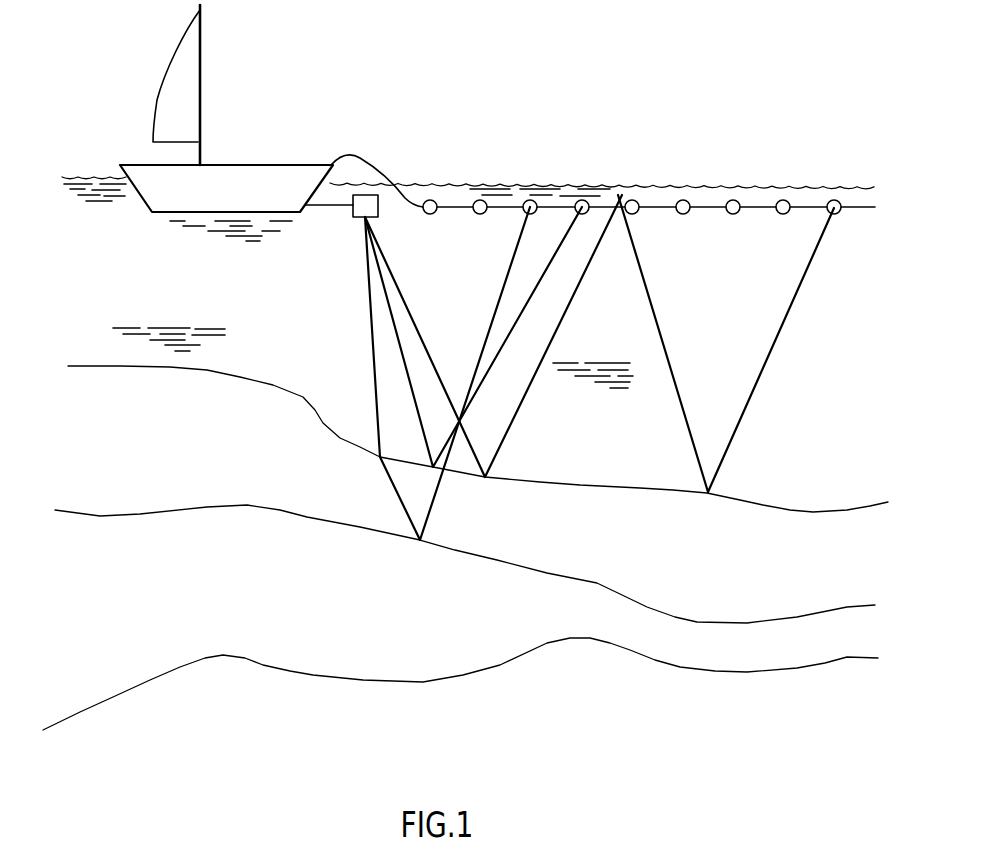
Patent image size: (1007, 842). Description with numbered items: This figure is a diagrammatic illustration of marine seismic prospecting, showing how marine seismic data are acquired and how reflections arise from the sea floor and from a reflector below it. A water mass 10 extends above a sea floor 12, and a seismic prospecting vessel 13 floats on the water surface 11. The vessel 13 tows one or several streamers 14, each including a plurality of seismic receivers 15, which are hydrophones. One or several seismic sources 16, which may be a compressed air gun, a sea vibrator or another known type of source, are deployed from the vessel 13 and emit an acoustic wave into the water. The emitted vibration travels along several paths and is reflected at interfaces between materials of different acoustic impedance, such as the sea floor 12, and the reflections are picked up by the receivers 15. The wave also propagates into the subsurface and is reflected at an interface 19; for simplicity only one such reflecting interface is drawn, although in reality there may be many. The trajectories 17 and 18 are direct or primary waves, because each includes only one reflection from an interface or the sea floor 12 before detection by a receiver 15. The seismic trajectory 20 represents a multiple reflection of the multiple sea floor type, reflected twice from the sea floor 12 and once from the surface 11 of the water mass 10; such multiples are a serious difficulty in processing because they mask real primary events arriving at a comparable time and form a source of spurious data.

The water mass 10 is at (810, 374).
The water surface 11 is at (620, 195).
The sea floor 12 is at (733, 497).
The seismic prospecting vessel 13 is at (263, 165).
The streamer 14 is at (417, 203).
The seismic receivers 15 is at (733, 214).
The seismic source 16 is at (367, 197).
The direct or primary wave trajectory 17 is at (373, 359).
The direct or primary wave trajectory 18 is at (413, 395).
The interface 19 is at (598, 583).
The seismic trajectory 20 is at (664, 340).